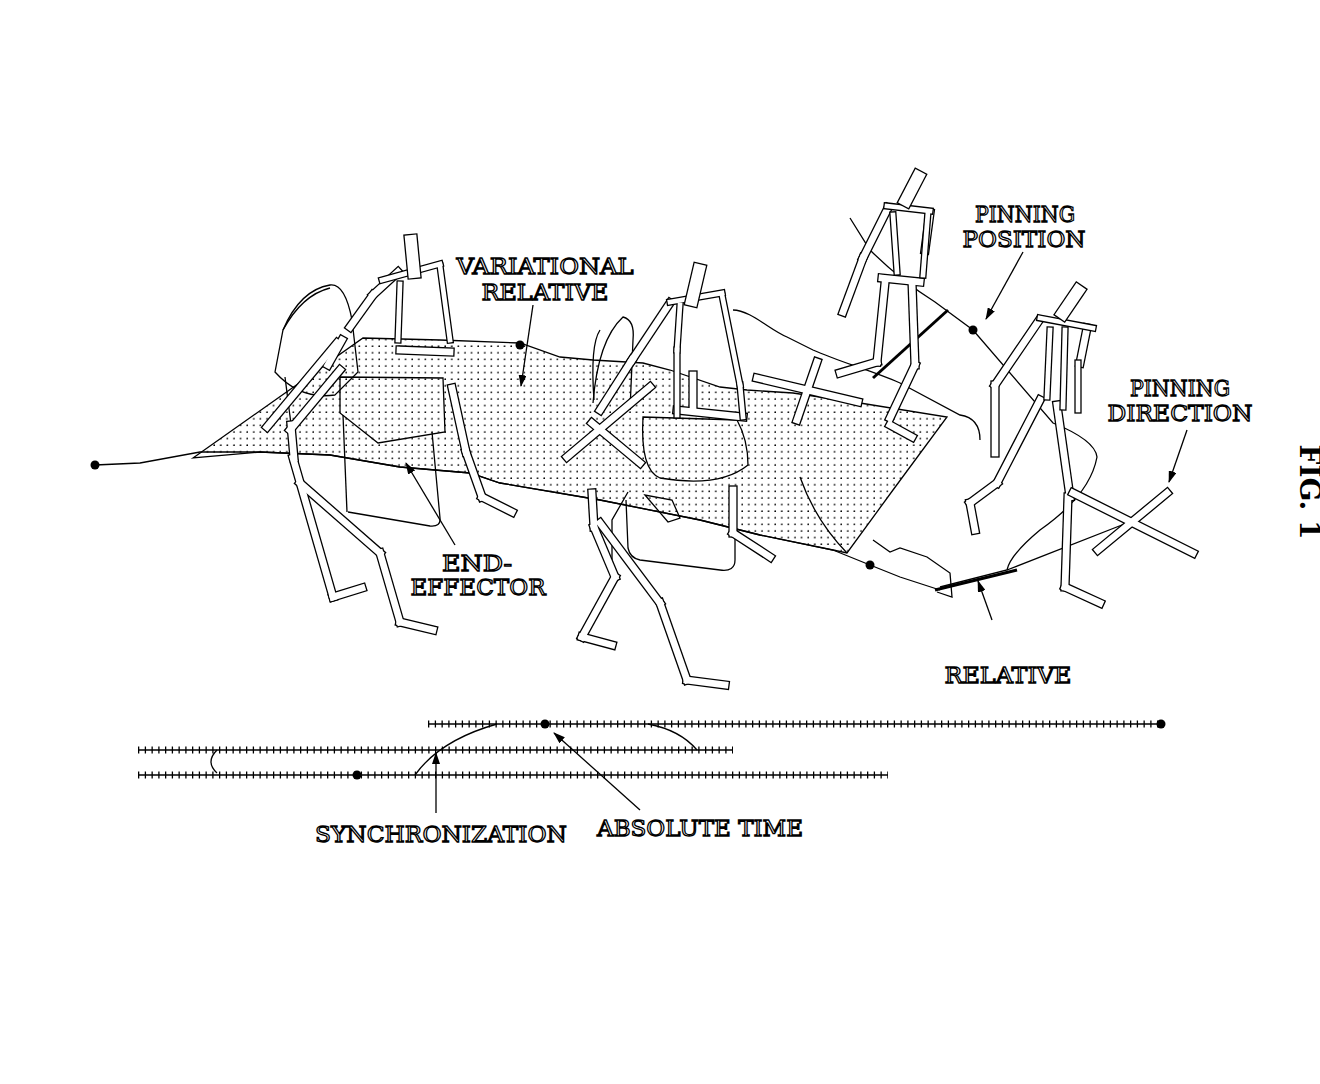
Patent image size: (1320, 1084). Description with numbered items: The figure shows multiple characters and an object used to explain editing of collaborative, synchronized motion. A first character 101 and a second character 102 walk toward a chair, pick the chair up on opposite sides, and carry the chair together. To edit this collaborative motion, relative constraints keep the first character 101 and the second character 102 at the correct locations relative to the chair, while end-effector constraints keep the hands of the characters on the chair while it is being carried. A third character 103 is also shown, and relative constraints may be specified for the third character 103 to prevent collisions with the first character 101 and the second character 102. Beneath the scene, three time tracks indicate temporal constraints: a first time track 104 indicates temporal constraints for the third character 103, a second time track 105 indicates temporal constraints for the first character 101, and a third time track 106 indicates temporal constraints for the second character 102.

The first character 101 is at (410, 237).
The second character 102 is at (302, 507).
The third character 103 is at (922, 173).
The first time track 104 is at (624, 725).
The second time track 105 is at (410, 750).
The third time track 106 is at (488, 776).